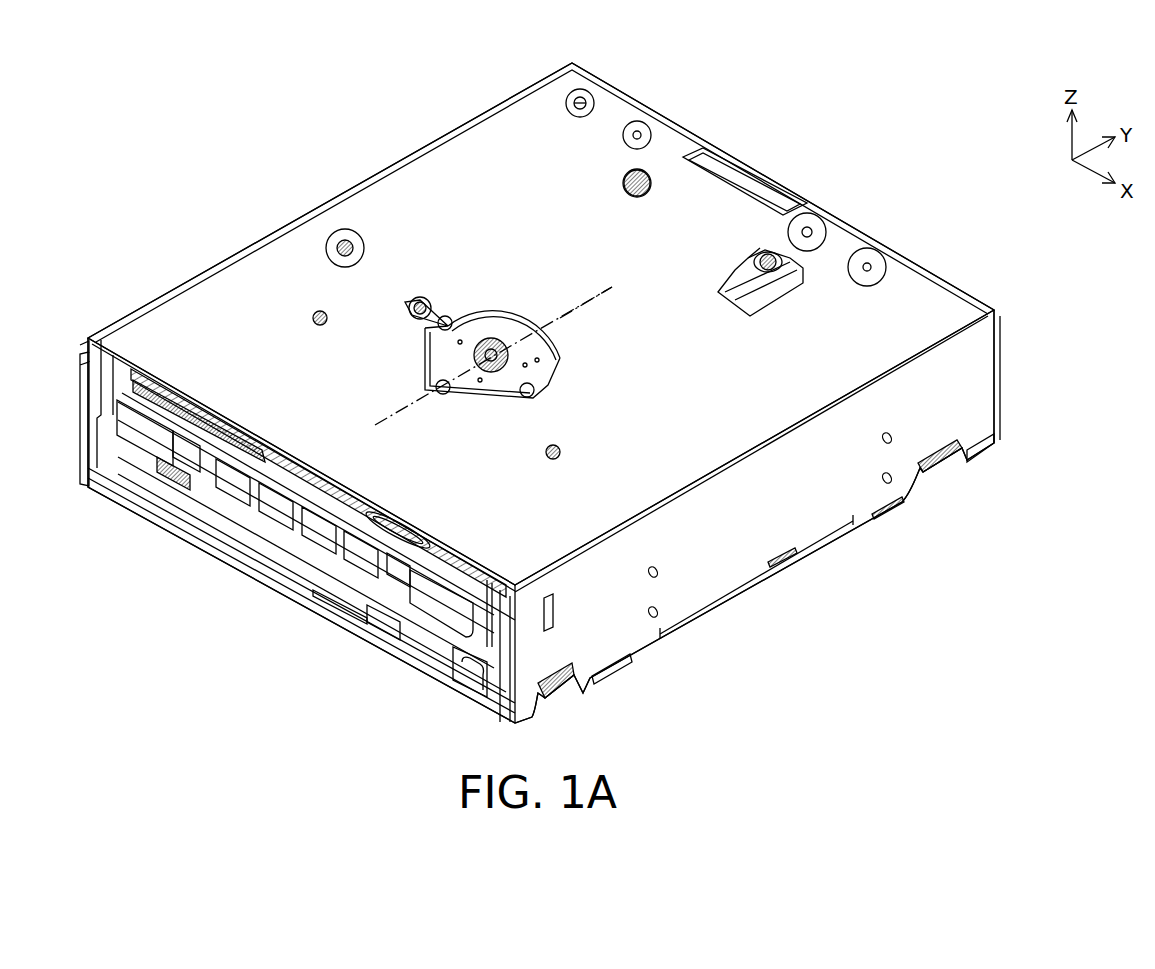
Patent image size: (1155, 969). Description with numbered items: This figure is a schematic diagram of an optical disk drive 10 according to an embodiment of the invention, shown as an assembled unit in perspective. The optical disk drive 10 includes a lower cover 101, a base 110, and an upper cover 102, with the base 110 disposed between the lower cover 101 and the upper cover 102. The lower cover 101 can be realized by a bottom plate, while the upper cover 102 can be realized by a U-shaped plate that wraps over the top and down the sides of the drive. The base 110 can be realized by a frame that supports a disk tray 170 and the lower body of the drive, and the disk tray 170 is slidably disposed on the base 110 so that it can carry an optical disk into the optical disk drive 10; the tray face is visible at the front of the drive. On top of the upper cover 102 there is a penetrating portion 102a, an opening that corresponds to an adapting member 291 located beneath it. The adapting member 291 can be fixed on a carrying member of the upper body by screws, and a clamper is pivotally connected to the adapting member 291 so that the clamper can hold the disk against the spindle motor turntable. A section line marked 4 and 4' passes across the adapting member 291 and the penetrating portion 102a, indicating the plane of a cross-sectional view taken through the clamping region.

The optical disk drive 10 is at (249, 108).
The lower cover 101 is at (413, 668).
The upper cover 102 is at (491, 101).
The penetrating portion 102a is at (520, 333).
The base 110 is at (253, 540).
The disk tray 170 is at (149, 436).
The adapting member 291 is at (482, 335).
The section line 4-4' 4 is at (493, 378).
The section line 4- 4' is at (615, 309).